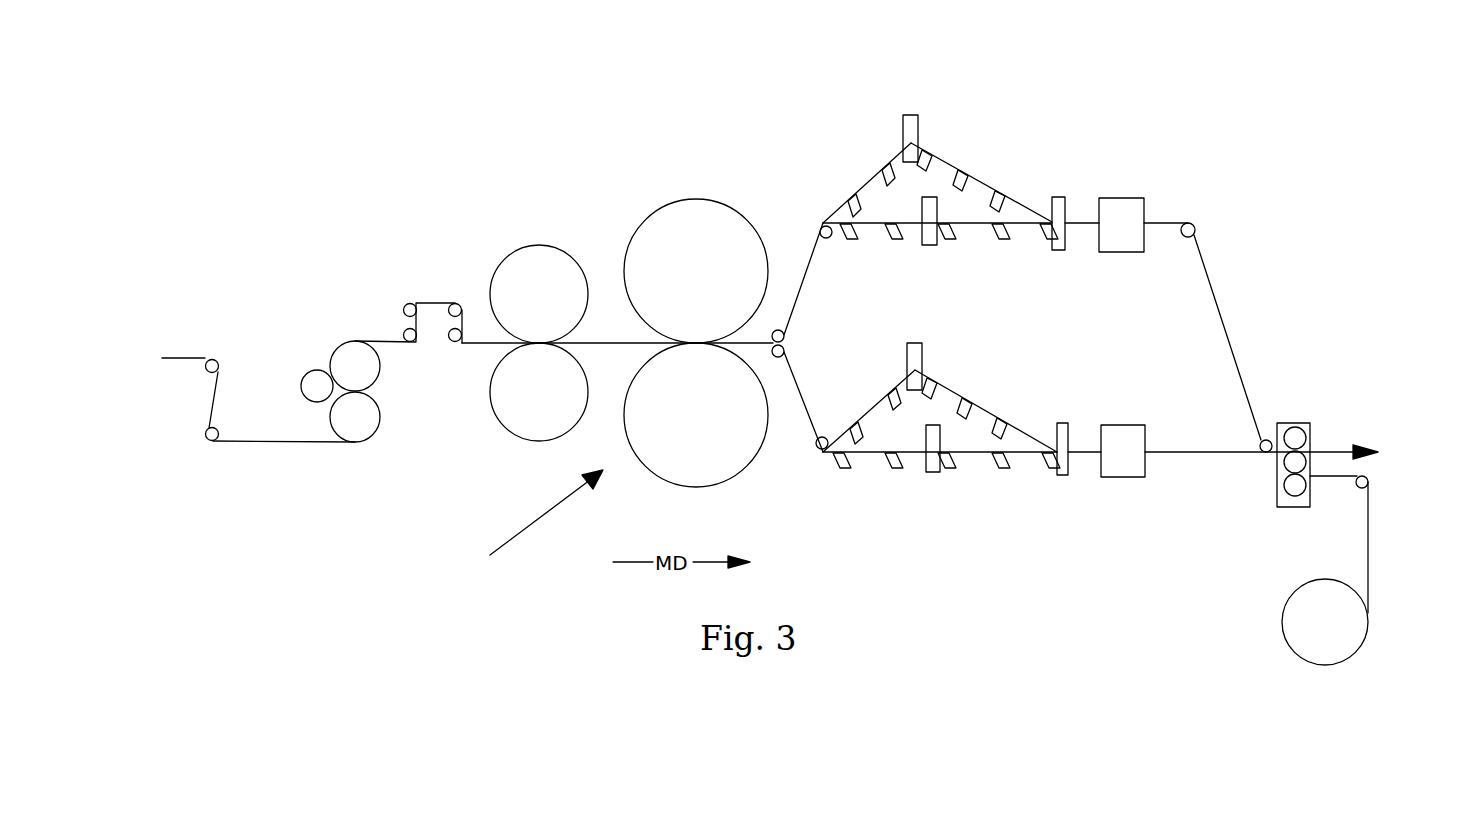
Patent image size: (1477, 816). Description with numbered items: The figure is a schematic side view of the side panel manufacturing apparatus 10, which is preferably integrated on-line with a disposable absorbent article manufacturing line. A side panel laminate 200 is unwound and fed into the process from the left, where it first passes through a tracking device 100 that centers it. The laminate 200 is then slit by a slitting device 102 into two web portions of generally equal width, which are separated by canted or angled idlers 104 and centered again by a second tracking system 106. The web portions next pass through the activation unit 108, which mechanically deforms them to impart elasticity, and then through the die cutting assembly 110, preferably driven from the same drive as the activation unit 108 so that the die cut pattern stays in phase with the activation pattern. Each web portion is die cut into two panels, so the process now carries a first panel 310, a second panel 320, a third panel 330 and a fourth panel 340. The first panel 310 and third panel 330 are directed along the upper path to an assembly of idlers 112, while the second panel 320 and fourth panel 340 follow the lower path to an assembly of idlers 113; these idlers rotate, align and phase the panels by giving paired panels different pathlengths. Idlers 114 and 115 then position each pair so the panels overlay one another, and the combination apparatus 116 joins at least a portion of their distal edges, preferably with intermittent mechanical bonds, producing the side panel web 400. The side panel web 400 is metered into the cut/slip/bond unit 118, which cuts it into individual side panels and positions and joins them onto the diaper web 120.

The side panel manufacturing apparatus 10 is at (530, 521).
The tracking device 100 is at (217, 392).
The slitting device 102 is at (347, 428).
The canted idlers 104 is at (405, 332).
The second tracking system 106 is at (453, 335).
The activation unit 108 is at (548, 265).
The die cutting assembly 110 is at (656, 232).
The assembly of idlers 112 is at (930, 202).
The assembly of idlers 113 is at (930, 428).
The idlers 114 is at (1060, 200).
The idlers 115 is at (1062, 477).
The combination apparatus 116 is at (1128, 208).
The cut/slip/bond unit 118 is at (1275, 504).
The diaper web 120 is at (1373, 560).
The side panel laminate 200 is at (183, 360).
The first panel 310 is at (865, 225).
The second panel 320 is at (875, 397).
The third panel 330 is at (868, 175).
The fourth panel 340 is at (863, 452).
The side panel web 400 is at (1158, 222).